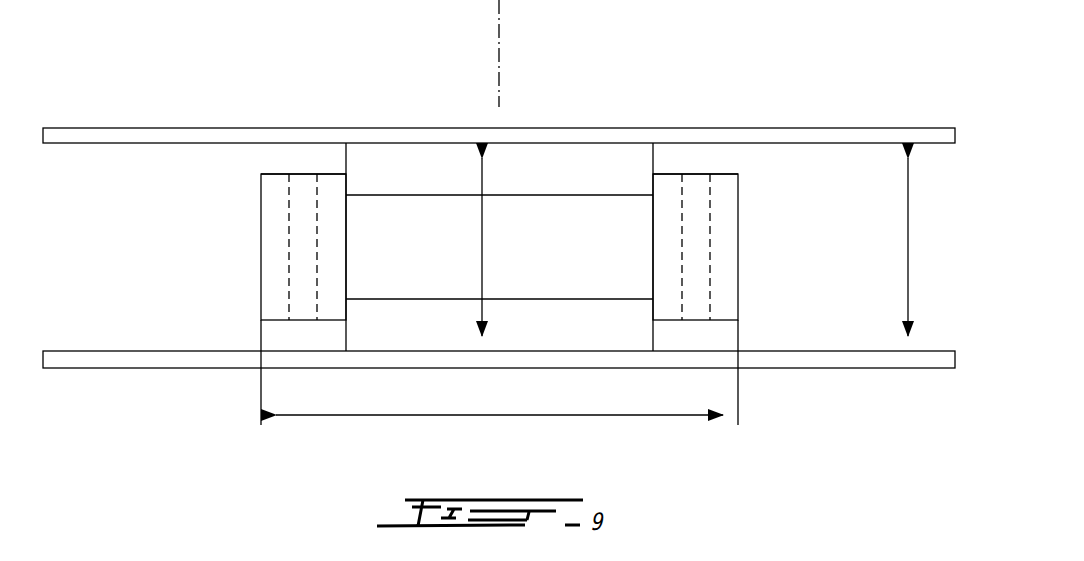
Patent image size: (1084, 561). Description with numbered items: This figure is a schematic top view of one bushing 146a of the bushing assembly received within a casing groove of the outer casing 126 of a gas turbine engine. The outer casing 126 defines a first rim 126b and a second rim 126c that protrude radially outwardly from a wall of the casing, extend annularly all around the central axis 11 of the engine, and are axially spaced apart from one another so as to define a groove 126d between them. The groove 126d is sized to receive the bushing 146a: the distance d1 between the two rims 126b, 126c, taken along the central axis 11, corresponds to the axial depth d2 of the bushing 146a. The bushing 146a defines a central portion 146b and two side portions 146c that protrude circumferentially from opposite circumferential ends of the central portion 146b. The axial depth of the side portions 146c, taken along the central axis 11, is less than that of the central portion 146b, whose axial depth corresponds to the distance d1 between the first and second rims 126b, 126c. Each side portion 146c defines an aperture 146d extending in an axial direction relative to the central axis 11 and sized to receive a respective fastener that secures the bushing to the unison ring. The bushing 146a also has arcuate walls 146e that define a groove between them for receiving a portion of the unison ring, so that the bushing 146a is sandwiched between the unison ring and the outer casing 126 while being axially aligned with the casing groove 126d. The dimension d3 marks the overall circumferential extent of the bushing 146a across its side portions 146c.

The central axis 11 is at (499, 35).
The outer casing 126 is at (842, 245).
The first rim 126b is at (847, 135).
The second rim 126c is at (848, 357).
The groove 126d is at (117, 290).
The bushing 146a is at (240, 205).
The central portion 146b is at (418, 334).
The side portion 146c is at (304, 162).
The aperture 146d is at (289, 246).
The arcuate wall 146e is at (571, 282).
The distance between rims d1 is at (908, 250).
The axial depth of bushing d2 is at (482, 249).
The insert length dimension d3 is at (496, 418).